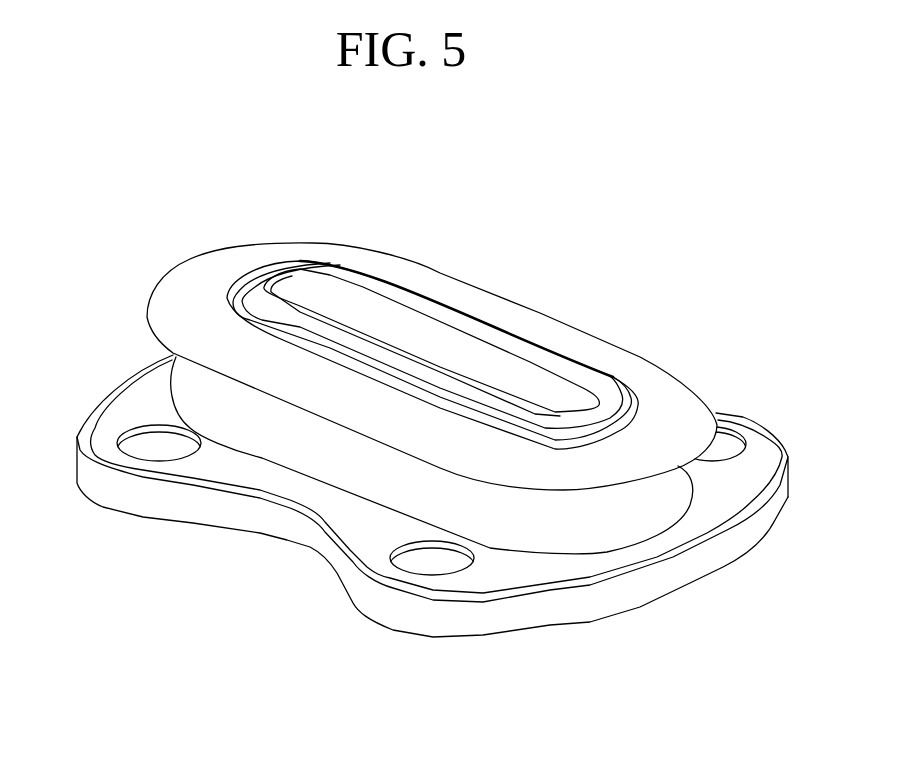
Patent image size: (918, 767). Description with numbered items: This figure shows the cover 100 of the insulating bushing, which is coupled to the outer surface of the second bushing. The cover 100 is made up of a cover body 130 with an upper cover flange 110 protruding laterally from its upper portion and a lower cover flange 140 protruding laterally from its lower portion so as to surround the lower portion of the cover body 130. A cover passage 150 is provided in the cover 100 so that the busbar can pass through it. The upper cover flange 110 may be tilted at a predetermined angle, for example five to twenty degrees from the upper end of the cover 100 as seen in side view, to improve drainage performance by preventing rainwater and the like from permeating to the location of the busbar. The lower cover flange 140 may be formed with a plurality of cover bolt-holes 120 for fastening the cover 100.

The cover 100 is at (262, 214).
The upper cover flange 110 is at (673, 400).
The cover bolt-holes 120 is at (150, 442).
The cover body 130 is at (200, 385).
The lower cover flange 140 is at (510, 567).
The cover passage 150 is at (401, 324).